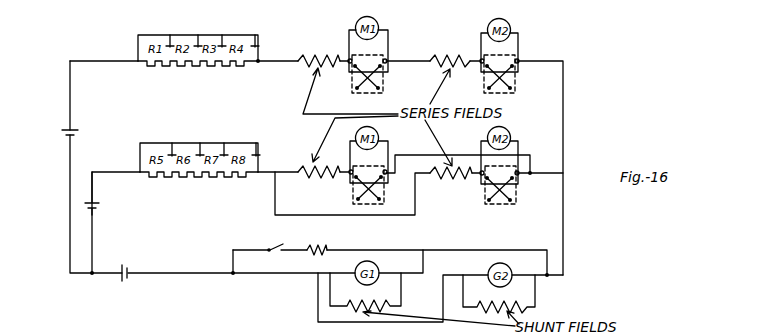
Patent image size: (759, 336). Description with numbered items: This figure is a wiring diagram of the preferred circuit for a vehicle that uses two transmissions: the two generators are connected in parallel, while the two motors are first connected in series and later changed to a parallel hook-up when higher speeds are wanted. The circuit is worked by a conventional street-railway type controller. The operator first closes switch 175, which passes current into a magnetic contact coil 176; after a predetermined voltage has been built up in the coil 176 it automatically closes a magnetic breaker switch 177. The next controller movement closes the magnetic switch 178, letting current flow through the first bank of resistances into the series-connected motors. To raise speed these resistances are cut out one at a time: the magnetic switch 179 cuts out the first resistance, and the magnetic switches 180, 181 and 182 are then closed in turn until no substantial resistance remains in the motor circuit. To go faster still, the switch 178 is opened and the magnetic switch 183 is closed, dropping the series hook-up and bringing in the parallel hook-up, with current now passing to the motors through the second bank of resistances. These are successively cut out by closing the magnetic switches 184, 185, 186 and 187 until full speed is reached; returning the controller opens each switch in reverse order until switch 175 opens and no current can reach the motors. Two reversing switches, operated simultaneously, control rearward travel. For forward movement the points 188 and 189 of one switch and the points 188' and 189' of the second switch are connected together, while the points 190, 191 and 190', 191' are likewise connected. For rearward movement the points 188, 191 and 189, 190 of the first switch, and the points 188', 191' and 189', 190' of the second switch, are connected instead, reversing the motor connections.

The switch 175 is at (270, 247).
The magnetic contact coil 176 is at (317, 244).
The magnetic breaker switch 177 is at (124, 281).
The magnetic switch 178 is at (65, 133).
The magnetic switch 179 is at (170, 40).
The magnetic switch 180 is at (197, 45).
The magnetic switch 181 is at (223, 44).
The magnetic switch 182 is at (258, 45).
The magnetic switch 183 is at (99, 206).
The magnetic switch 184 is at (173, 146).
The magnetic switch 185 is at (201, 152).
The magnetic switch 186 is at (224, 150).
The magnetic switch 187 is at (257, 152).
The reversing switch point 188 is at (322, 50).
The reversing switch point 189 is at (349, 87).
The reversing switch point 190 is at (408, 47).
The reversing switch point 191 is at (389, 83).
The reversing switch point 188' is at (466, 41).
The reversing switch point 189' is at (512, 92).
The reversing switch point 190' is at (546, 46).
The reversing switch point 191' is at (531, 82).